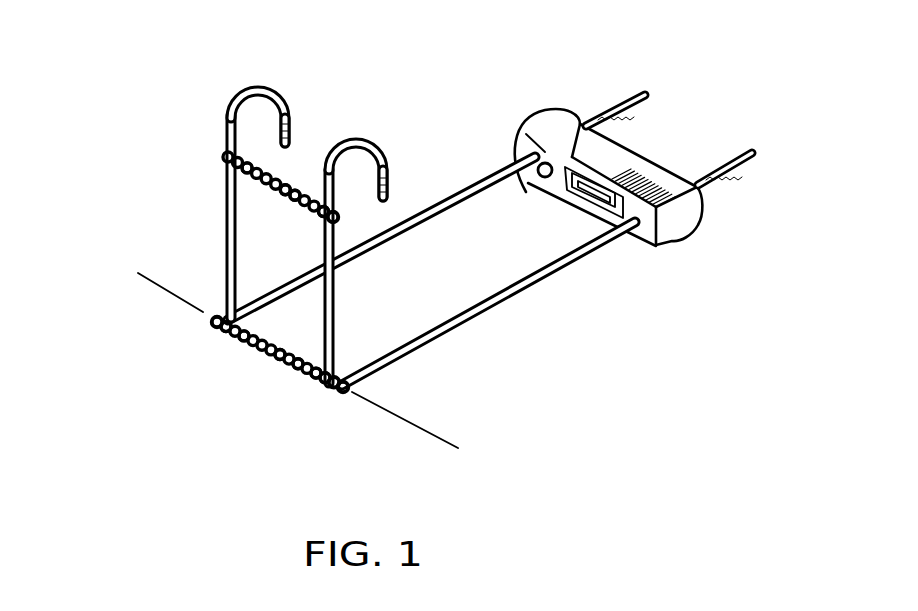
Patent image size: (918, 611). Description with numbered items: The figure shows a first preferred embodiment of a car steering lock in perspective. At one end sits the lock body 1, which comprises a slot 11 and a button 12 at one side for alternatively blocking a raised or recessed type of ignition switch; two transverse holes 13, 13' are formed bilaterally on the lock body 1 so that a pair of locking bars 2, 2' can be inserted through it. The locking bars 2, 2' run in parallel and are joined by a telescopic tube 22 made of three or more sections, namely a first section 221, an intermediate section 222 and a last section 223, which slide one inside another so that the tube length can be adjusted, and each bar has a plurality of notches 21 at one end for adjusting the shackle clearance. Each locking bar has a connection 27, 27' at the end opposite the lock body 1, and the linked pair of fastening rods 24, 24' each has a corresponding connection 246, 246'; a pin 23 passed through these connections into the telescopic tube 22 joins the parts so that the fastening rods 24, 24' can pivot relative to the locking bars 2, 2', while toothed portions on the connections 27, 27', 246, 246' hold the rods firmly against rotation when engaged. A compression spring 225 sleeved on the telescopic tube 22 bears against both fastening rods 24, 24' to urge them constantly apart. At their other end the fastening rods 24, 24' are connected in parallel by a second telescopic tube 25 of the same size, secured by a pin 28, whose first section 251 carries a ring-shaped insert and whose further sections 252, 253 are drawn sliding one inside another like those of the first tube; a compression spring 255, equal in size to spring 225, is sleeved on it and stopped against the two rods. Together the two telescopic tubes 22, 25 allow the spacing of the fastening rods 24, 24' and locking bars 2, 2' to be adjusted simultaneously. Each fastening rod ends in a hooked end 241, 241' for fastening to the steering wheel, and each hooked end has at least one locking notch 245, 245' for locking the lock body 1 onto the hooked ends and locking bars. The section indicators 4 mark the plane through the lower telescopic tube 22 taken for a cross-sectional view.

The lock body 1 is at (643, 148).
The locking bar 2 is at (488, 303).
The locking bar 2' is at (381, 214).
The section line 4 is at (150, 282).
The slot 11 is at (575, 212).
The button 12 is at (540, 177).
The transverse hole 13 is at (672, 253).
The transverse hole 13' is at (547, 123).
The notches 21 is at (733, 173).
The telescopic tube 22 is at (258, 356).
The first section 221 is at (249, 343).
The intermediate section 222 is at (282, 360).
The last section 223 is at (299, 369).
The compression spring 225 is at (313, 369).
The pin 23 is at (350, 393).
The fastening rod 24 is at (364, 276).
The fastening rod 24' is at (190, 216).
The hooked end 241 is at (398, 133).
The hooked end 241' is at (251, 79).
The locking notch 245 is at (422, 176).
The locking notch 245' is at (219, 122).
The connection 246 is at (296, 443).
The connection 246' is at (182, 351).
The telescopic tube 25 is at (306, 175).
The first section 251 is at (253, 173).
The bead 252 is at (294, 200).
The bead 253 is at (321, 206).
The compression spring 255 is at (289, 186).
The connection 27 is at (329, 417).
The connection 27' is at (169, 322).
The pin 28 is at (338, 218).